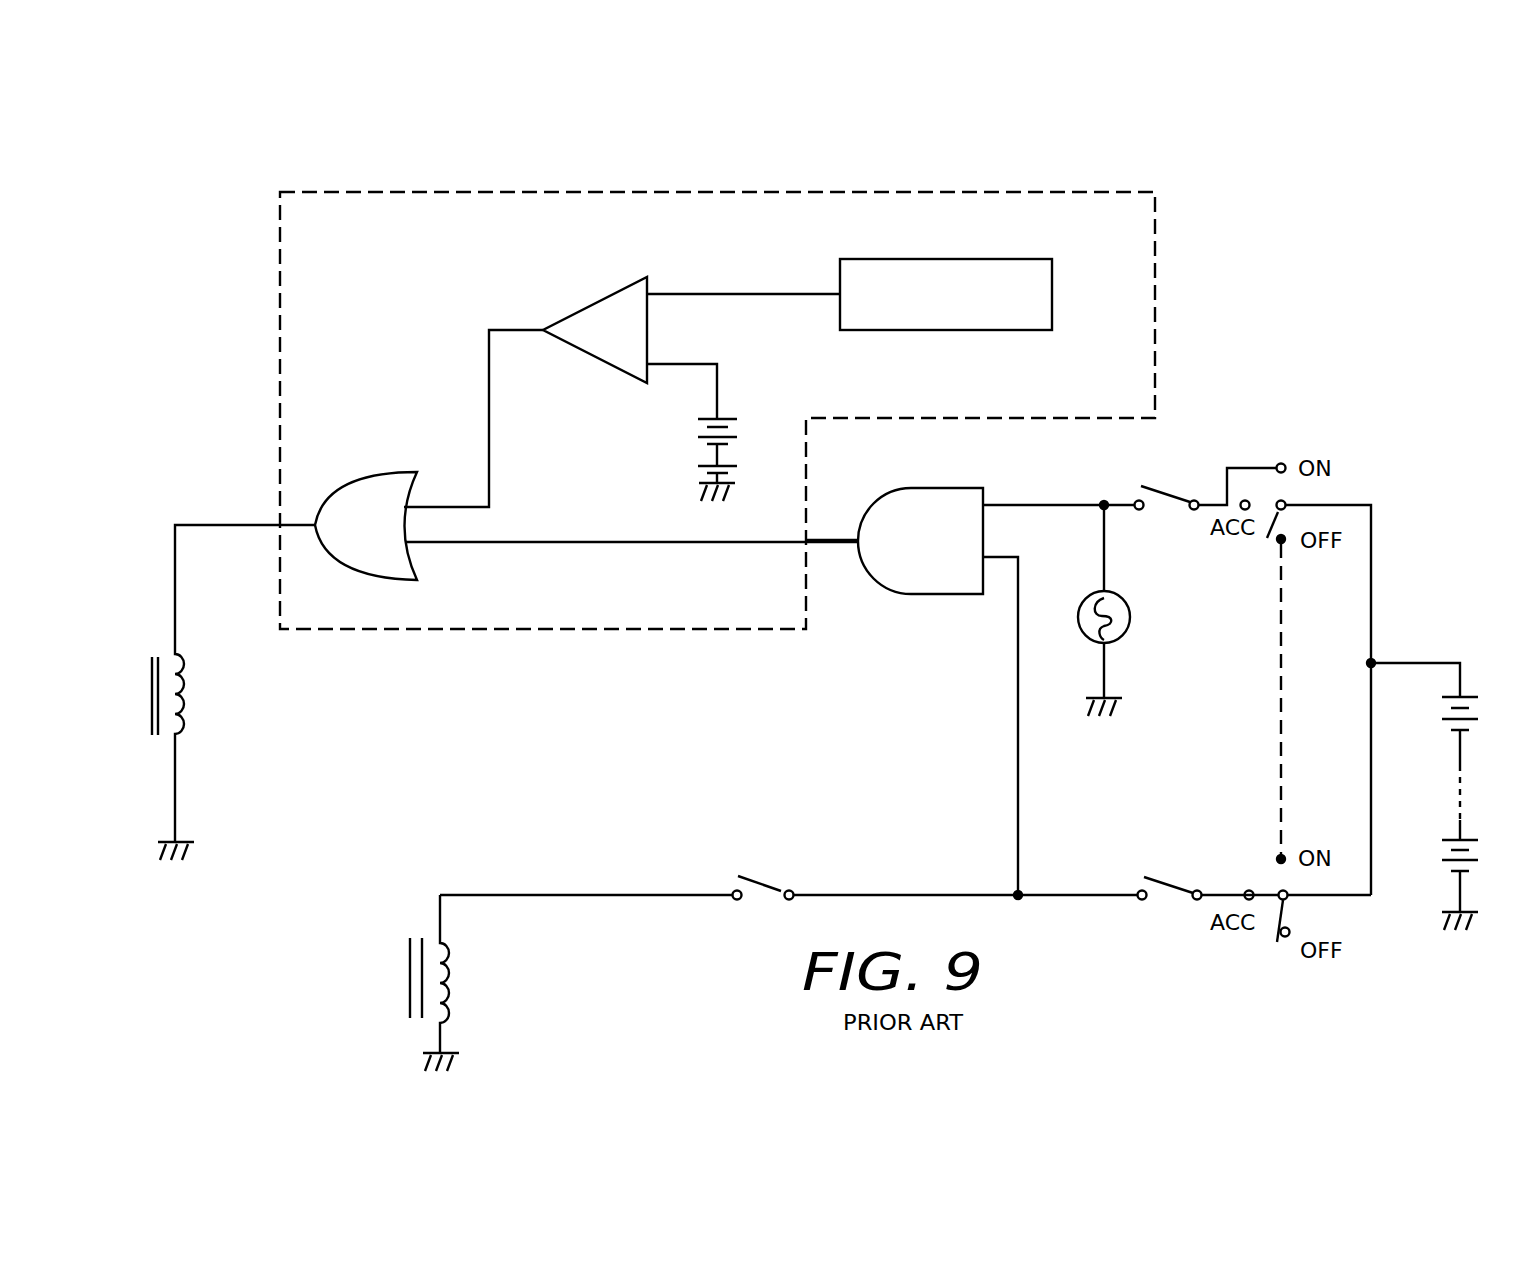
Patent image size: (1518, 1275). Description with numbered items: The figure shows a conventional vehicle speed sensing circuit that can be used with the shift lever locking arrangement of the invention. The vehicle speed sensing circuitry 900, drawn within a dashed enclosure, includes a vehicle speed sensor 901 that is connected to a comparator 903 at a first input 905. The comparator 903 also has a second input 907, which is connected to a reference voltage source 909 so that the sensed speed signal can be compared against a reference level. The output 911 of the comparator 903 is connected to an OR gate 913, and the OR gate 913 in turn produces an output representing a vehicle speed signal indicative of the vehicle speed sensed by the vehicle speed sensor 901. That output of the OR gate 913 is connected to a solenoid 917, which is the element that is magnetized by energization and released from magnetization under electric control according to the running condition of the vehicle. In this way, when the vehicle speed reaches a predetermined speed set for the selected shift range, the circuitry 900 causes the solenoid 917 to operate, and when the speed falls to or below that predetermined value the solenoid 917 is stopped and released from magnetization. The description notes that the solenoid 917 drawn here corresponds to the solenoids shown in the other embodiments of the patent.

The vehicle speed sensing circuitry 900 is at (697, 632).
The vehicle speed sensor 901 is at (967, 259).
The comparator 903 is at (590, 358).
The first input 905 is at (648, 296).
The second input 907 is at (648, 366).
The reference voltage source 909 is at (700, 438).
The output 911 is at (535, 337).
The OR gate 913 is at (350, 487).
The solenoid 917 is at (195, 705).